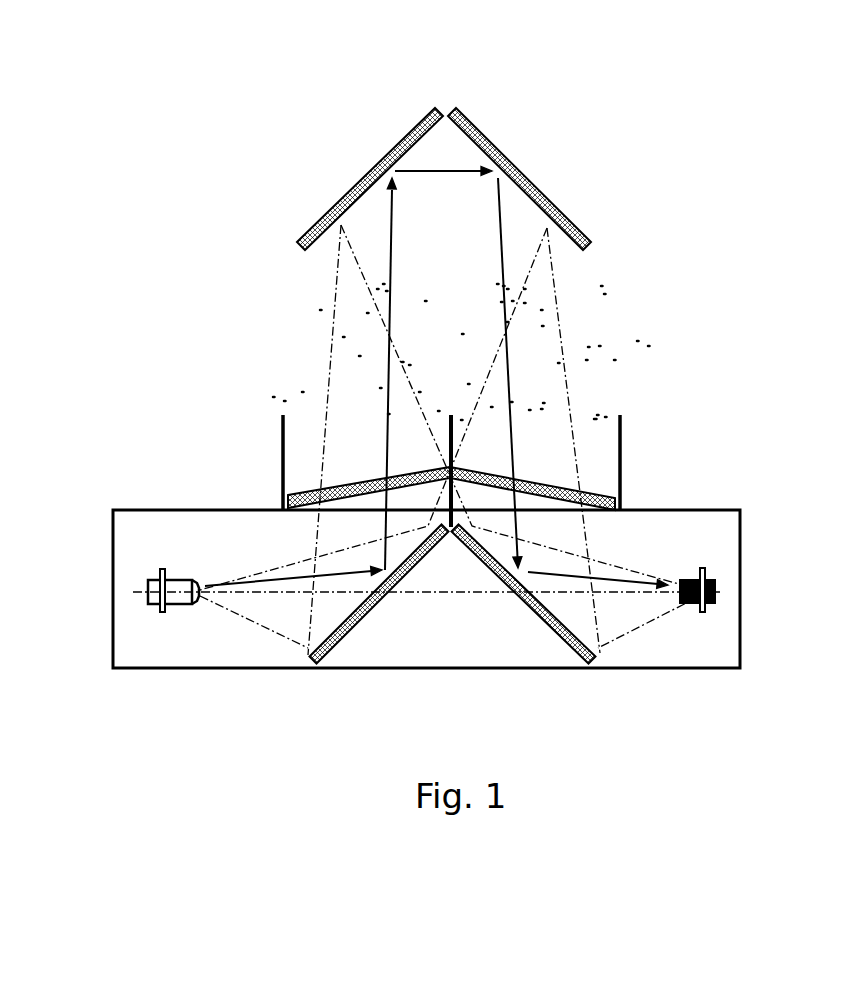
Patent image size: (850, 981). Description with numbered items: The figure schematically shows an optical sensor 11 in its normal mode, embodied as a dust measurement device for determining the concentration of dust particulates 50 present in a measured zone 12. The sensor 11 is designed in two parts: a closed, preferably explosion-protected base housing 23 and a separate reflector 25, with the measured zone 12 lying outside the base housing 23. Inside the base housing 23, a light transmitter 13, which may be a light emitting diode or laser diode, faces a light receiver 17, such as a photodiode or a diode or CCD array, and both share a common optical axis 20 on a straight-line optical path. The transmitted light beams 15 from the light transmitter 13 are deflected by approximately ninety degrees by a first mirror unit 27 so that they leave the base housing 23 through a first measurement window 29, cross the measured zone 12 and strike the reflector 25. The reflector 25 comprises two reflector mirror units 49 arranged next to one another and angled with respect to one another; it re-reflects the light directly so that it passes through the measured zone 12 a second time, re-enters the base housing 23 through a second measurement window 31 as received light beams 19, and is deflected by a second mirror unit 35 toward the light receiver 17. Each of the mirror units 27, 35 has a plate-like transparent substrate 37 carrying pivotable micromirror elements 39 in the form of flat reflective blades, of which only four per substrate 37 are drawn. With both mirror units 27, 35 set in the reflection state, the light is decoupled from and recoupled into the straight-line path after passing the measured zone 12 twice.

The optical sensor 11 is at (758, 164).
The measured zone 12 is at (618, 311).
The light transmitter 13 is at (175, 597).
The transmitted light beams 15 is at (283, 577).
The light receiver 17 is at (707, 600).
The received light beams 19 is at (635, 580).
The common optical axis 20 is at (463, 595).
The base housing 23 is at (742, 540).
The reflector 25 is at (452, 139).
The first mirror unit 27 is at (391, 613).
The first measurement window 29 is at (337, 492).
The second measurement window 31 is at (553, 492).
The second mirror unit 35 is at (524, 608).
The plate-like substrate 37 is at (461, 634).
The micromirror elements 39 is at (312, 627).
The reflector mirror units 49 is at (415, 130).
The dust particulates 50 is at (268, 284).